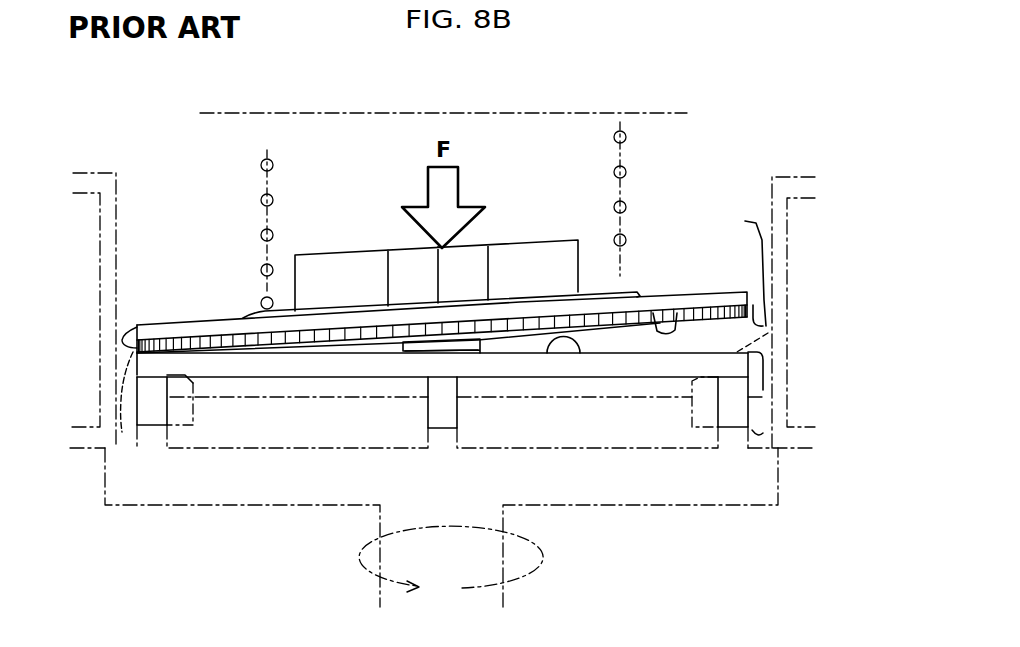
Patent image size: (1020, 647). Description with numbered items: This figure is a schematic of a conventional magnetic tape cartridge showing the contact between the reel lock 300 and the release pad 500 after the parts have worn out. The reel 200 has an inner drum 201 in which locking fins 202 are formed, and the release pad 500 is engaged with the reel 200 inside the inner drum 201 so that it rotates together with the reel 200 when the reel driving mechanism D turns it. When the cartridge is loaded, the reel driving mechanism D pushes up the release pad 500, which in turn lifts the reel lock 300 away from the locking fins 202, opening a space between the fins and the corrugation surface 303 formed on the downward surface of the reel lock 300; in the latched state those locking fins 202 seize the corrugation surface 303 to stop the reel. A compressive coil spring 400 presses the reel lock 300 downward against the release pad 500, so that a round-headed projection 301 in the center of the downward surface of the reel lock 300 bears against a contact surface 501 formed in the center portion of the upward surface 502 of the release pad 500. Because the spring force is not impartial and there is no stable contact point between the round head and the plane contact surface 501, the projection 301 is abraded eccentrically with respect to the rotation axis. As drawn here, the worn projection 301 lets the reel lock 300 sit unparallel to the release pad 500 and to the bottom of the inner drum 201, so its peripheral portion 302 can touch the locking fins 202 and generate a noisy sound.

The reel 200 is at (792, 172).
The inner drum 201 is at (117, 192).
The locking fins 202 is at (122, 432).
The reel lock 300 is at (760, 278).
The projection 301 is at (403, 343).
The peripheral portion 302 is at (137, 343).
The corrugation surface 303 is at (674, 322).
The compressive coil spring 400 is at (272, 165).
The release pad 500 is at (760, 396).
The contact surface 501 is at (476, 352).
The upward surface 502 is at (578, 355).
The reel driving mechanism D is at (740, 490).